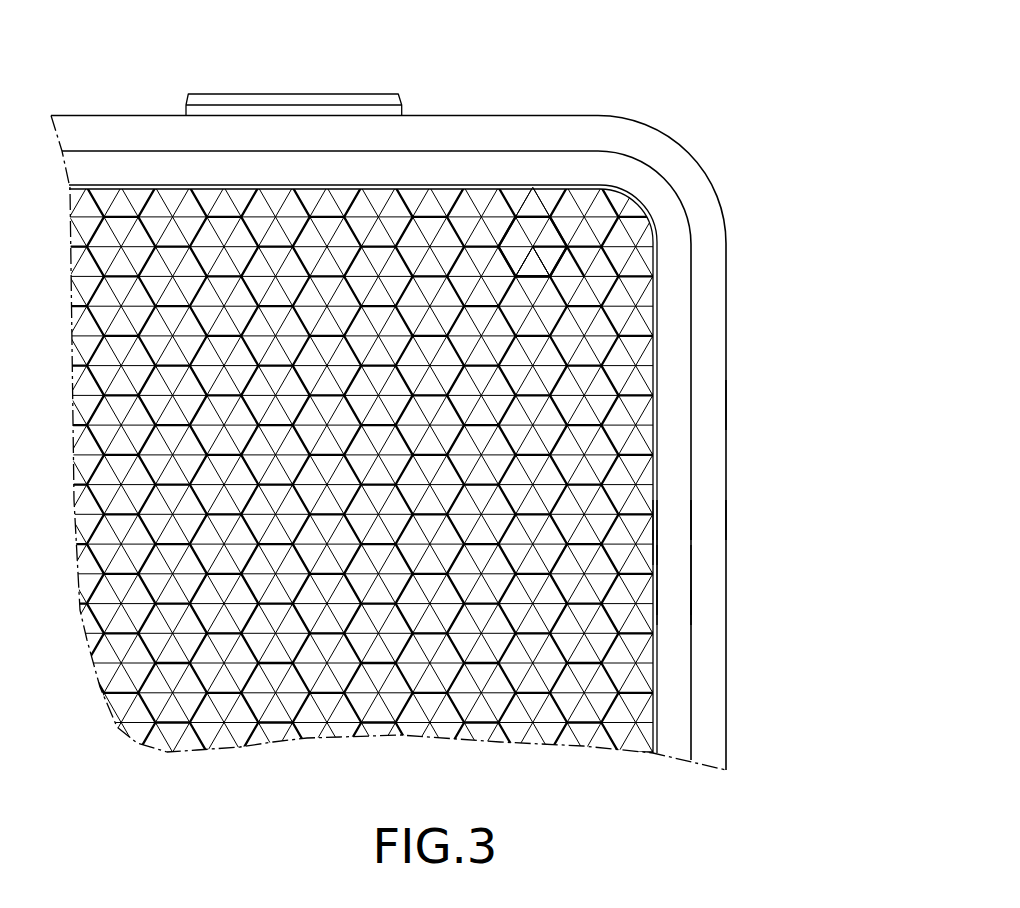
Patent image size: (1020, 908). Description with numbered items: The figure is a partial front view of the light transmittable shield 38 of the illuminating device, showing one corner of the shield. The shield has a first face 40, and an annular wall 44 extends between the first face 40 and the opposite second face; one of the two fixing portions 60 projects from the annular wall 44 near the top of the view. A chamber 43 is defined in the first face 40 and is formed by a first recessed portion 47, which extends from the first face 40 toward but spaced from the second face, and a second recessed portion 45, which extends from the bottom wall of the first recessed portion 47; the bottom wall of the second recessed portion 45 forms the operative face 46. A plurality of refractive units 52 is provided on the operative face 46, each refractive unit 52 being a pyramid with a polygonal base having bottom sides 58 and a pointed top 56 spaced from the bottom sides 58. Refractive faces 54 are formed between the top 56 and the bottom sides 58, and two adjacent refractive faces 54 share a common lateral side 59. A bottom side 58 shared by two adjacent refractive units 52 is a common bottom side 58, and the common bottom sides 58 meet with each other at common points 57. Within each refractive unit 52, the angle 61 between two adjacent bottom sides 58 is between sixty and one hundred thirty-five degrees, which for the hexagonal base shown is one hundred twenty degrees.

The light transmittable shield 38 is at (663, 150).
The first face 40 is at (712, 518).
The chamber 43 is at (796, 555).
The annular wall 44 is at (728, 405).
The second recessed portion 45 is at (652, 532).
The operative face 46 is at (653, 517).
The first recessed portion 47 is at (677, 602).
The refractive unit 52 is at (570, 249).
The refractive face 54 is at (524, 240).
The top 56 is at (538, 247).
The common point 57 is at (533, 288).
The bottom side 58 is at (522, 243).
The common lateral side 59 is at (543, 262).
The fixing portion 60 is at (369, 96).
The angle 61 is at (518, 276).